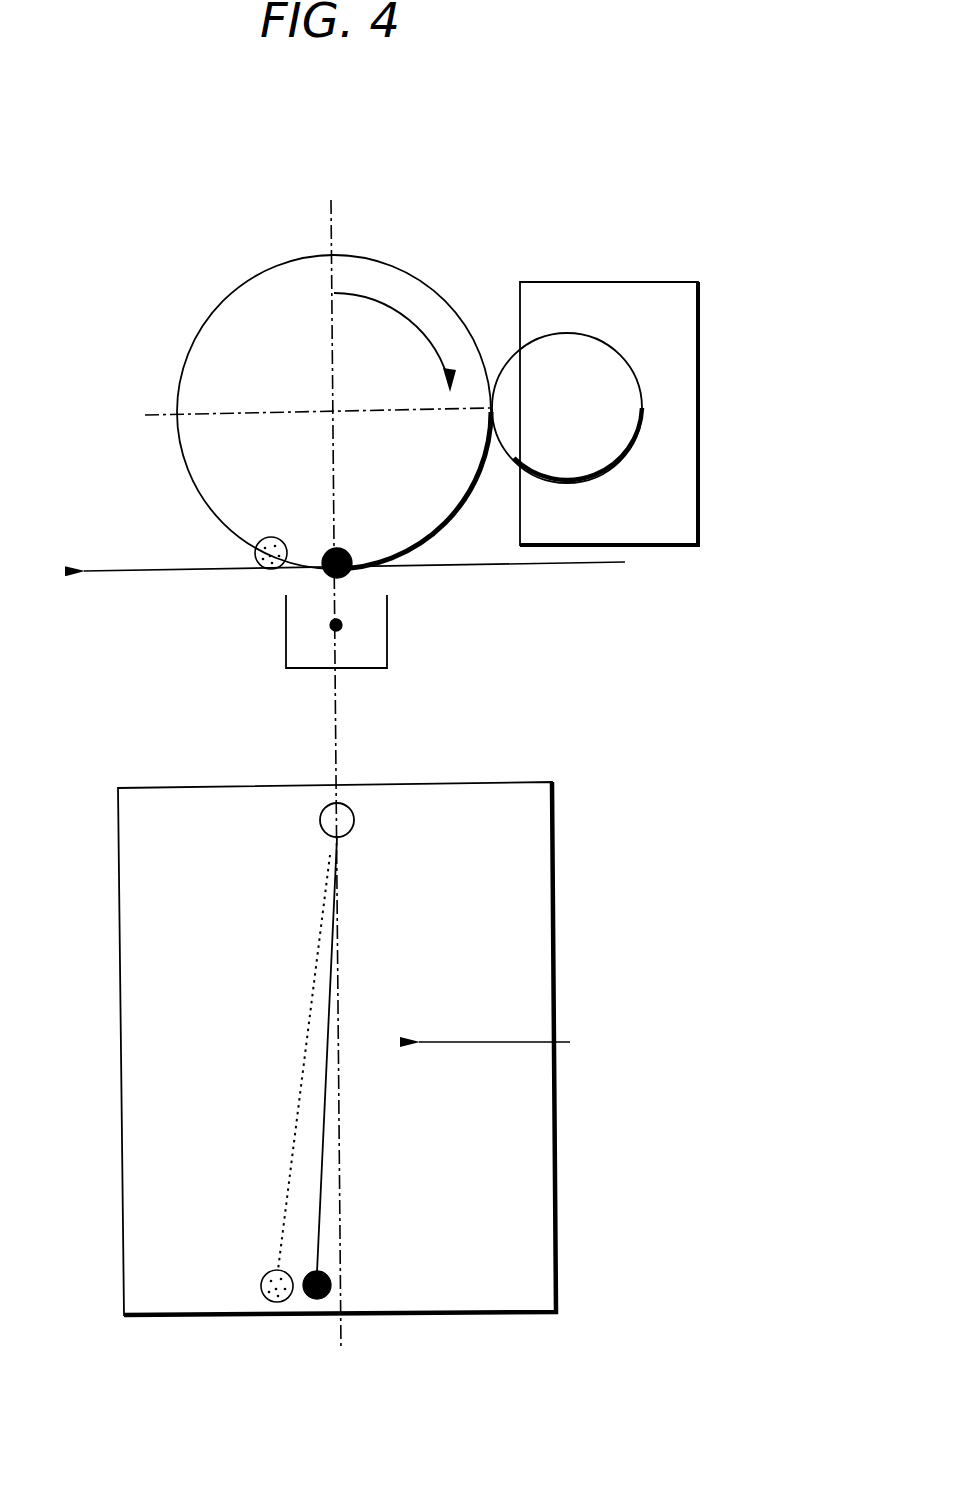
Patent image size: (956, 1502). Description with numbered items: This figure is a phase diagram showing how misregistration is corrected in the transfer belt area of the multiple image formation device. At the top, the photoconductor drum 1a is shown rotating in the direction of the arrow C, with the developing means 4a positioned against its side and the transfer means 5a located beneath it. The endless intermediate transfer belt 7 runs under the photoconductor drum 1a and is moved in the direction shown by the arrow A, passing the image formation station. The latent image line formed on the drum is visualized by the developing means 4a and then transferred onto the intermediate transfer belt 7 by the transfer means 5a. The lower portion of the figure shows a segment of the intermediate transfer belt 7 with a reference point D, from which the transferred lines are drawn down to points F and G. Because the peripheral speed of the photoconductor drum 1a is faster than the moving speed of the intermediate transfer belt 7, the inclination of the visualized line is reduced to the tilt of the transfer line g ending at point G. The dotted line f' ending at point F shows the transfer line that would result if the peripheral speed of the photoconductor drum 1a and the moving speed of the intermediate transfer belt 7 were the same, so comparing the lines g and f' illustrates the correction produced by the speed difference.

The photoconductor drum 1a is at (212, 358).
The developing means 4a is at (627, 303).
The transfer means 5a is at (385, 650).
The intermediate transfer belt 7 is at (532, 567).
The rotation direction of drum C is at (395, 342).
The reference point on sheet D is at (352, 678).
The dot image position F is at (259, 901).
The dot image position G is at (339, 1288).
The transfer line g is at (320, 1212).
The transfer line (equal speed case) f' is at (242, 1062).
The moving direction of intermediate transfer belt A is at (494, 1023).